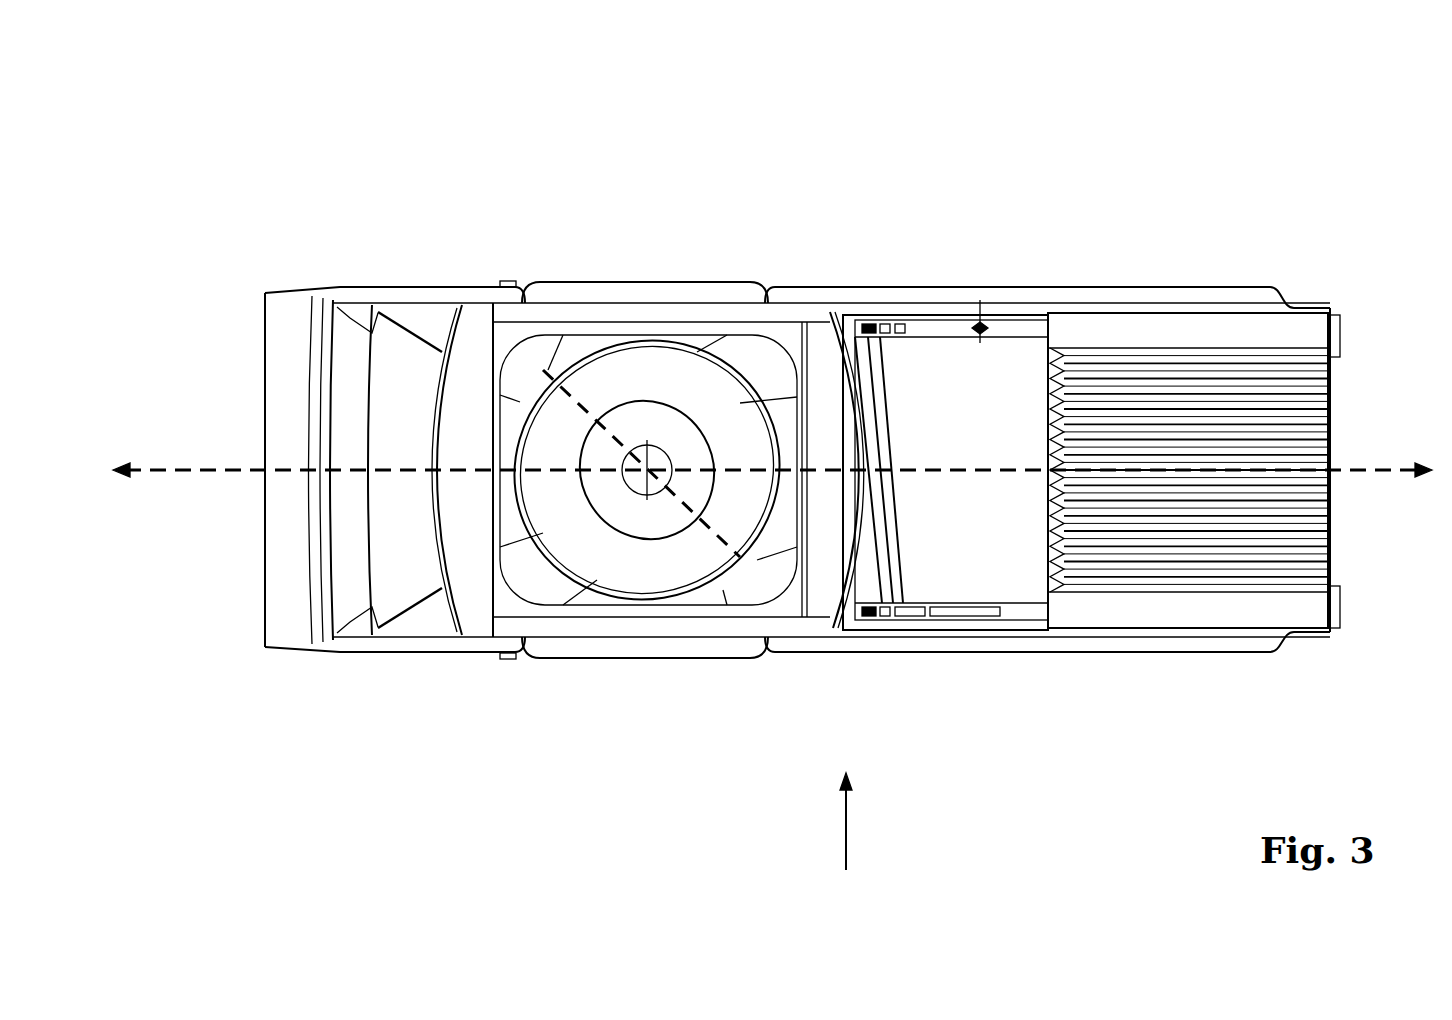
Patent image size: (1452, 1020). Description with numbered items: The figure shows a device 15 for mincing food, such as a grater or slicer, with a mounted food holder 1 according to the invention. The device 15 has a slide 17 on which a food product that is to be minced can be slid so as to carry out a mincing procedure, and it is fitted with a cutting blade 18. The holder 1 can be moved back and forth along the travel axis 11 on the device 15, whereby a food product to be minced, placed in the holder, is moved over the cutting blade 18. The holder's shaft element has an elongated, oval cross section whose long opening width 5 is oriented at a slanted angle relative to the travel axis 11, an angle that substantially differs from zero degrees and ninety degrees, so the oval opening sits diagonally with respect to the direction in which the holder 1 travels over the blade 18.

The food holder 1 is at (671, 250).
The long opening width 5 is at (563, 387).
The travel axis 11 is at (197, 473).
The device for mincing food 15 is at (854, 846).
The slide 17 is at (1270, 417).
The cutting blade 18 is at (873, 387).